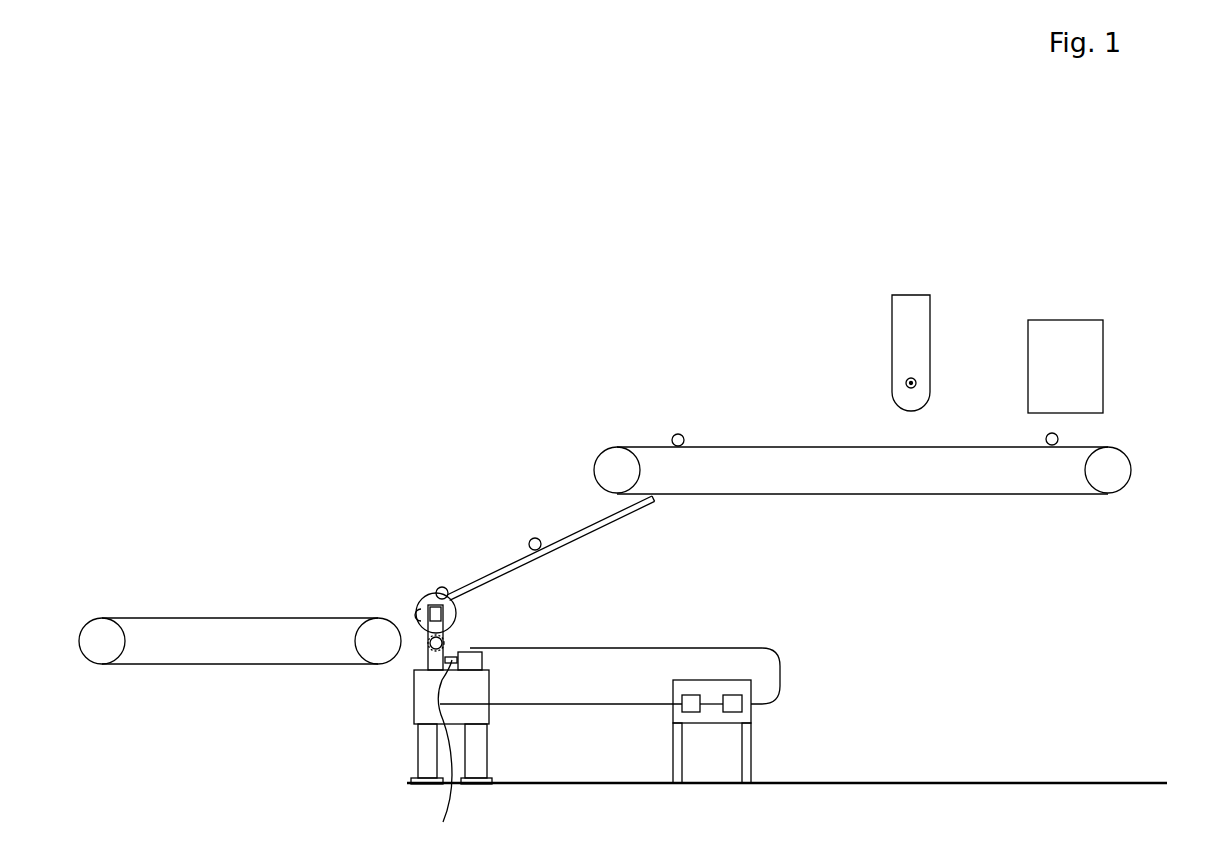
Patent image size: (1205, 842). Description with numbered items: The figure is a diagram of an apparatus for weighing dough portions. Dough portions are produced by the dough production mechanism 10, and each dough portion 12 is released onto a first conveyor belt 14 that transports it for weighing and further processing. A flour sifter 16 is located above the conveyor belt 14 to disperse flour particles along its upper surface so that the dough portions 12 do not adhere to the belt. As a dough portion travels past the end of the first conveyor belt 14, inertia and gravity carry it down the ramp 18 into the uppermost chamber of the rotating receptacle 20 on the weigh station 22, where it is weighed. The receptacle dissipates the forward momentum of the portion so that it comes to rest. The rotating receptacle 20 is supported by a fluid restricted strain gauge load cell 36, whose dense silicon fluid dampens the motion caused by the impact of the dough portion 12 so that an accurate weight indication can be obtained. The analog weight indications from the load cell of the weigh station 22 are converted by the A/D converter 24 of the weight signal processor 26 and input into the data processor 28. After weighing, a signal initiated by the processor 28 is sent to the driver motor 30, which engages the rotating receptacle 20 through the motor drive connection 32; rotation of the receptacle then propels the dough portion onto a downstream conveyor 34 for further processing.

The dough production mechanism 10 is at (1078, 312).
The dough portion 12 is at (678, 434).
The first conveyor belt 14 is at (1137, 473).
The flour sifter 16 is at (887, 315).
The ramp 18 is at (599, 533).
The rotating receptacle 20 is at (428, 597).
The weigh station 22 is at (420, 645).
The A/D converter 24 is at (693, 693).
The weight signal processor 26 is at (743, 680).
The data processor 28 is at (737, 712).
The driver motor 30 is at (487, 660).
The motor drive connection 32 is at (436, 751).
The downstream conveyor 34 is at (238, 612).
The fluid restricted strain gauge load cell 36 is at (413, 662).